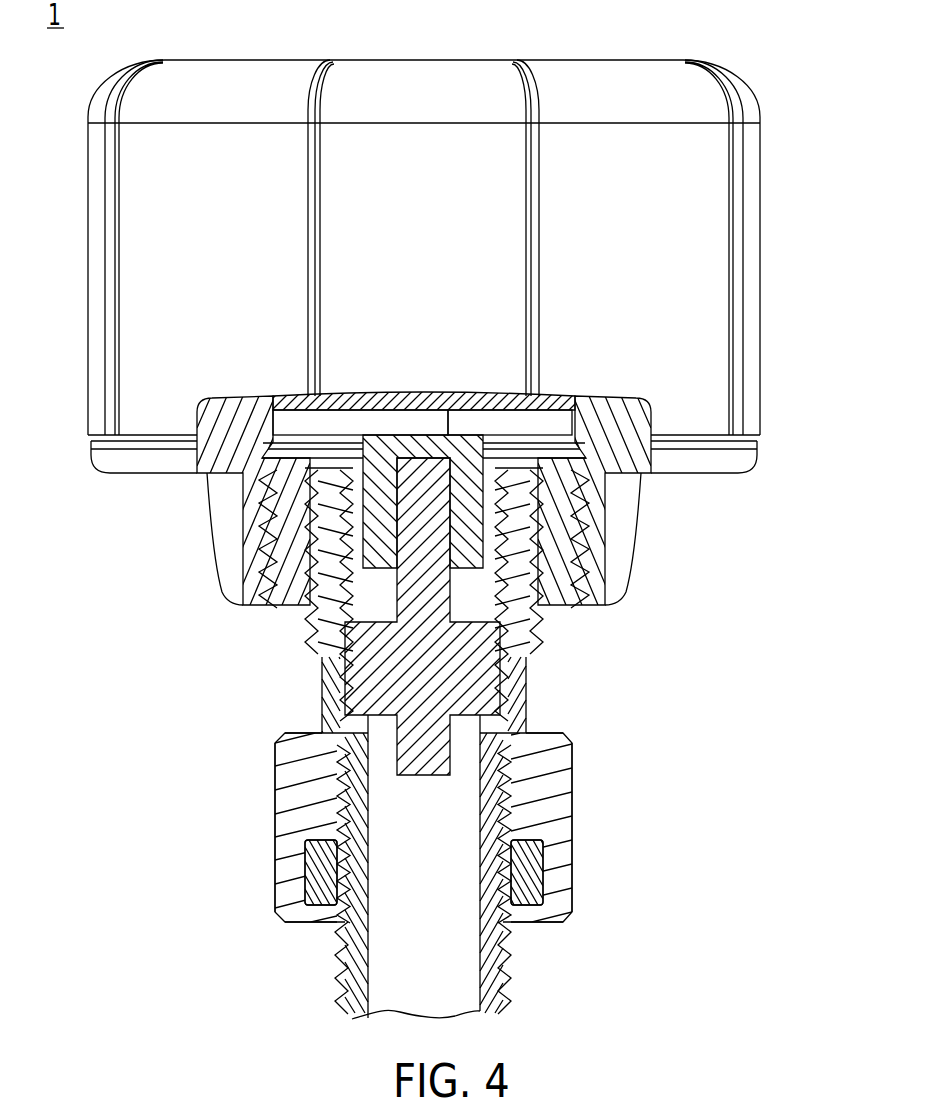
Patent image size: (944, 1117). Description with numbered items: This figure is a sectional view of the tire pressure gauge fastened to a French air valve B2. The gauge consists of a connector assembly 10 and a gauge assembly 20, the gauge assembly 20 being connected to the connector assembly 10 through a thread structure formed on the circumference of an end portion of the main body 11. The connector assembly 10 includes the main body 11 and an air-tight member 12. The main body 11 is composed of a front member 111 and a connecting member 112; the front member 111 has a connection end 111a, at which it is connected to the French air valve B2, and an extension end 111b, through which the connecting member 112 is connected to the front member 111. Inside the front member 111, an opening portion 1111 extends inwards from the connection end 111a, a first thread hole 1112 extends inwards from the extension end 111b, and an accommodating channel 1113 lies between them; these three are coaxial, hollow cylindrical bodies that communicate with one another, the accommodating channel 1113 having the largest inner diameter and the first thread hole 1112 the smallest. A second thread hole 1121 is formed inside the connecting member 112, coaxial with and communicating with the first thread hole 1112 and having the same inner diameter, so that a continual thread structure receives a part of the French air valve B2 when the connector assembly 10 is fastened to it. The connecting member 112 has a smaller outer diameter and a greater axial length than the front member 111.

The connector assembly 10 is at (700, 710).
The main body 11 is at (650, 686).
The front member 111 is at (565, 773).
The opening portion 1111 is at (510, 920).
The first thread hole 1112 is at (350, 768).
The accommodating channel 1113 is at (303, 845).
The connection end 111a is at (312, 939).
The extension end 111b is at (298, 716).
The connecting member 112 is at (522, 718).
The second thread hole 1121 is at (362, 592).
The air-tight member 12 is at (527, 875).
The gauge assembly 20 is at (774, 272).
The French air valve B2 is at (467, 667).